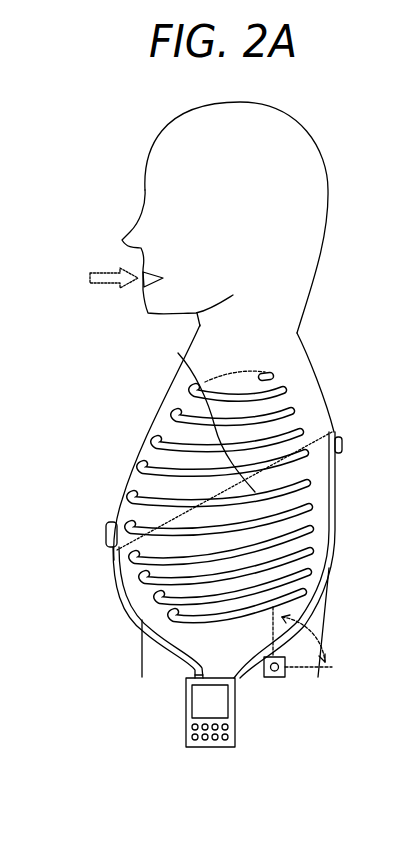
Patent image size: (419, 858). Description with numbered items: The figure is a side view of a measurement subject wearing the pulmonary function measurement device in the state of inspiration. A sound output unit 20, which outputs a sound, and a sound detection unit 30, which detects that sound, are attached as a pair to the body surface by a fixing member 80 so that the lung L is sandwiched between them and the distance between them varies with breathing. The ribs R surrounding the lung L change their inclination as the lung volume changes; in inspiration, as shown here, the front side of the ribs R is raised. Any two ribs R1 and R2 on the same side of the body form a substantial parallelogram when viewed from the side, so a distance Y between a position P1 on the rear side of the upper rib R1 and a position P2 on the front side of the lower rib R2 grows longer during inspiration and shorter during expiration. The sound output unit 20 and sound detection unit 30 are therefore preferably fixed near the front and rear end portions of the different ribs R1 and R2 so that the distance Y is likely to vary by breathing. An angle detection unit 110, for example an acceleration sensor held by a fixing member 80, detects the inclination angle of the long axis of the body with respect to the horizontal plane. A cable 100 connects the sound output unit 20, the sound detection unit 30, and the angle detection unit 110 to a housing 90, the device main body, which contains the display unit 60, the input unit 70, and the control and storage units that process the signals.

The sound output unit 20 is at (343, 450).
The sound detection unit 30 is at (106, 535).
The display unit 60 is at (205, 703).
The input unit 70 is at (193, 725).
The fixing member 80 is at (106, 524).
The housing 90 is at (187, 680).
The cable 100 is at (120, 597).
The angle detection unit 110 is at (287, 673).
The rib R is at (173, 450).
The upper rib R1 is at (147, 493).
The lower rib R2 is at (310, 507).
The lung L is at (168, 393).
The distance Y is at (206, 412).
The position on the rear side of the upper rib P1 is at (333, 431).
The position on the front side of the lower rib P2 is at (112, 550).